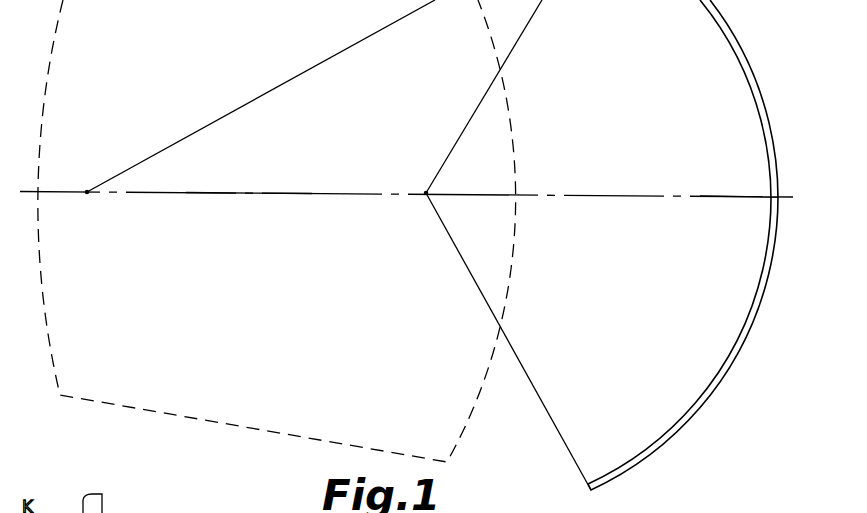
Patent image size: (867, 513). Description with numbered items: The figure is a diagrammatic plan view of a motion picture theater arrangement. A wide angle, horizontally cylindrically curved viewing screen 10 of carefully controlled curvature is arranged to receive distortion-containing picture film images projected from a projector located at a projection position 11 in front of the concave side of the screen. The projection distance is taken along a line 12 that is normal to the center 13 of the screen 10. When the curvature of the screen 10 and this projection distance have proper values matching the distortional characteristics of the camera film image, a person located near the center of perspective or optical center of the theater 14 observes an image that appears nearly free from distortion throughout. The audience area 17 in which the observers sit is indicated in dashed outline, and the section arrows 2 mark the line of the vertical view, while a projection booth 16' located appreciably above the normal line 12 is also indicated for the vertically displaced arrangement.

The viewing screen 10 is at (748, 78).
The projection position 11 is at (87, 192).
The line normal to the center of the screen 12 is at (201, 192).
The center of the screen 13 is at (772, 196).
The center of perspective of the theater 14 is at (426, 193).
The audience area 17 is at (476, 373).
The section line 2- 2 is at (57, 168).
The projection booth 16' is at (111, 503).